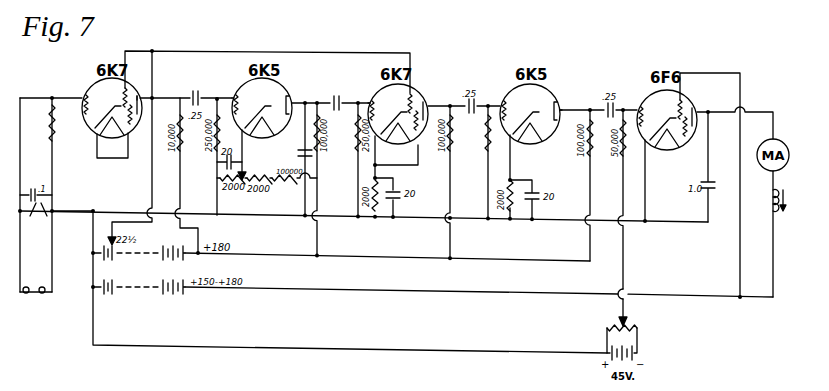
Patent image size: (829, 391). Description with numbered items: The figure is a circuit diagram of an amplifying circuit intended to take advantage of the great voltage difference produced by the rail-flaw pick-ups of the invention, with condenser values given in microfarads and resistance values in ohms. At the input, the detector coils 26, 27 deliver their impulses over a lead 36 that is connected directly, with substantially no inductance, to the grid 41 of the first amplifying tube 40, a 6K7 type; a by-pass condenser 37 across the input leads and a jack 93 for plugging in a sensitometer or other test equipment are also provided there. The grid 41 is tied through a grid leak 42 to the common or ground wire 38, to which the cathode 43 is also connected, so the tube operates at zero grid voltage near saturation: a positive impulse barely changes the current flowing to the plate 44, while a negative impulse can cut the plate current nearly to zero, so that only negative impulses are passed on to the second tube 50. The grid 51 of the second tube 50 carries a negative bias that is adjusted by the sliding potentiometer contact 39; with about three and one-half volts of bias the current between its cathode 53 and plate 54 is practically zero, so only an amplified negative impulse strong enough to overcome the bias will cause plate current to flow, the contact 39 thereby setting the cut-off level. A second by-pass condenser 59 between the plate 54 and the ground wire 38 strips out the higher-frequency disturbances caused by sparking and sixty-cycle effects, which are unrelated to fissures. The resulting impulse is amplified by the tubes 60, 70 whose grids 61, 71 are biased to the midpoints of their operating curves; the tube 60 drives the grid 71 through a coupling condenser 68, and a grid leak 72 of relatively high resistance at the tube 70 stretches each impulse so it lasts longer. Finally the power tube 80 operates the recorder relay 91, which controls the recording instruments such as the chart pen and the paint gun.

The detector coil 26 is at (26, 296).
The detector coil 27 is at (44, 296).
The lead 36 is at (20, 178).
The by-pass condenser 37 is at (58, 213).
The common or ground wire 38 is at (74, 204).
The sliding potentiometer contact 39 is at (246, 175).
The first amplifying tube 40 is at (100, 86).
The grid 41 is at (84, 93).
The grid leak 42 is at (50, 136).
The cathode 43 is at (98, 127).
The plate 44 is at (138, 97).
The second tube 50 is at (286, 94).
The grid 51 is at (236, 98).
The cathode 53 is at (246, 84).
The plate 54 is at (334, 98).
The by-pass condenser 59 is at (312, 153).
The tube 60 is at (414, 95).
The grid 61 is at (379, 96).
The coupling condenser 68 is at (466, 98).
The tube 70 is at (561, 99).
The grid 71 is at (511, 95).
The grid leak 72 is at (488, 152).
The power tube 80 is at (646, 91).
The relay 91 is at (770, 215).
The jack 93 is at (35, 220).